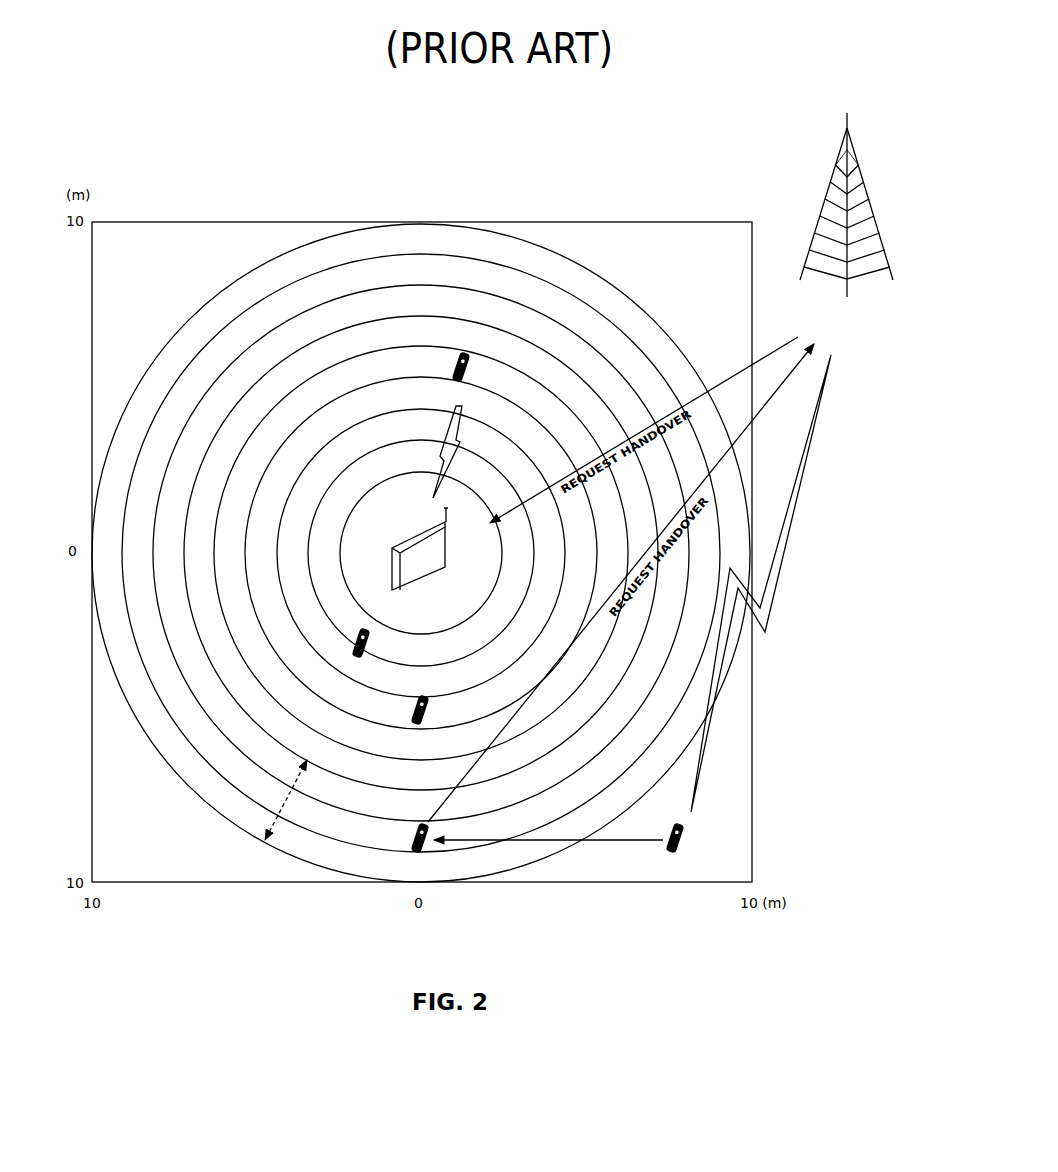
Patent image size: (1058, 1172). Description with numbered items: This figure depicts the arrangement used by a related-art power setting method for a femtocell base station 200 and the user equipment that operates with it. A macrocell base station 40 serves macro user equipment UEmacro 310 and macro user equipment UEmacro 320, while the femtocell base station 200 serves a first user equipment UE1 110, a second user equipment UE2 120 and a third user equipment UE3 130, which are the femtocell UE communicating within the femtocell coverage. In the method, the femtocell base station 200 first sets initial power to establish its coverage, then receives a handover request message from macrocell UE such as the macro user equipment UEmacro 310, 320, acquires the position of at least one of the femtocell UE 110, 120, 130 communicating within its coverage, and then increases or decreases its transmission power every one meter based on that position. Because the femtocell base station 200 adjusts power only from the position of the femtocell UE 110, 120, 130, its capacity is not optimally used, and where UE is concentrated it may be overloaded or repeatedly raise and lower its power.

The macrocell base station 40 is at (830, 198).
The first user equipment UE1 110 is at (428, 704).
The second user equipment UE2 120 is at (468, 358).
The third user equipment UE3 130 is at (355, 634).
The femtocell base station 200 is at (447, 548).
The macro user equipment UEmacro 310 is at (430, 826).
The macro user equipment UEmacro 320 is at (684, 826).